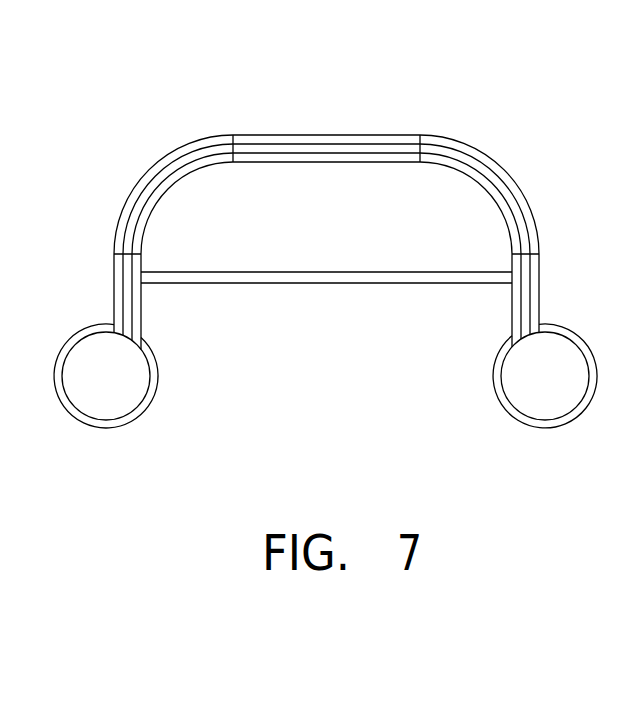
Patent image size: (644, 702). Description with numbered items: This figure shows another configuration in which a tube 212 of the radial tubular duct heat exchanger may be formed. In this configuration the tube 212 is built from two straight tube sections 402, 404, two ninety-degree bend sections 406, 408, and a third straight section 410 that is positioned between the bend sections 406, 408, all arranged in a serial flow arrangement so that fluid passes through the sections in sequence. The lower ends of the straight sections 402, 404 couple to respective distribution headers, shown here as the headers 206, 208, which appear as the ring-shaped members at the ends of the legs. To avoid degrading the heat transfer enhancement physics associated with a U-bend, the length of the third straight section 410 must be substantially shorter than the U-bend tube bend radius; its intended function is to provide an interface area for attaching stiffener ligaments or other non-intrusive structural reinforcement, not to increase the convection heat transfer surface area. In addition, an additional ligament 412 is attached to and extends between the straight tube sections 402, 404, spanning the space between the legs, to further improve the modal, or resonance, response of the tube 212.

The tube 212 is at (503, 97).
The distribution header 206 is at (130, 423).
The distribution header 208 is at (553, 428).
The straight tube section 402 is at (142, 302).
The straight tube section 404 is at (512, 288).
The 90° bend section 406 is at (157, 204).
The 90° bend section 408 is at (490, 197).
The third straight section 410 is at (289, 162).
The ligament 412 is at (267, 283).